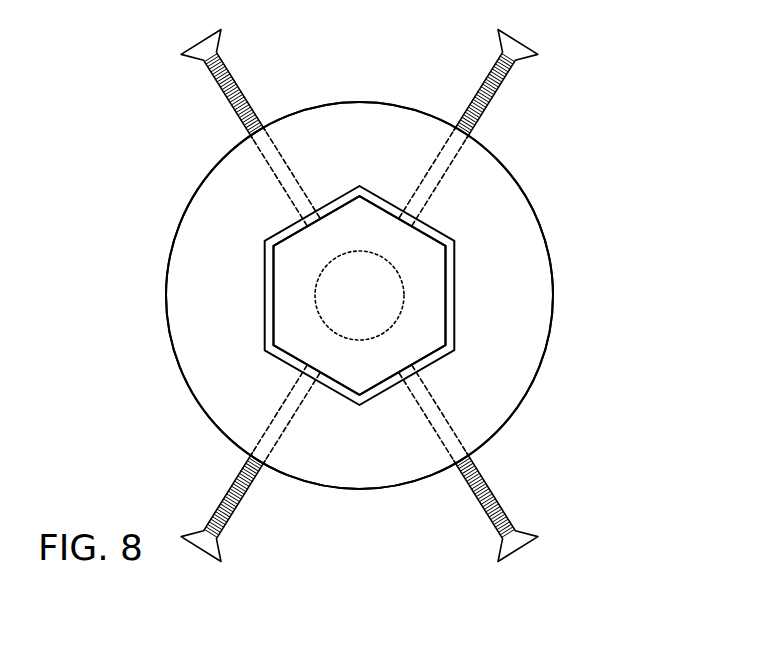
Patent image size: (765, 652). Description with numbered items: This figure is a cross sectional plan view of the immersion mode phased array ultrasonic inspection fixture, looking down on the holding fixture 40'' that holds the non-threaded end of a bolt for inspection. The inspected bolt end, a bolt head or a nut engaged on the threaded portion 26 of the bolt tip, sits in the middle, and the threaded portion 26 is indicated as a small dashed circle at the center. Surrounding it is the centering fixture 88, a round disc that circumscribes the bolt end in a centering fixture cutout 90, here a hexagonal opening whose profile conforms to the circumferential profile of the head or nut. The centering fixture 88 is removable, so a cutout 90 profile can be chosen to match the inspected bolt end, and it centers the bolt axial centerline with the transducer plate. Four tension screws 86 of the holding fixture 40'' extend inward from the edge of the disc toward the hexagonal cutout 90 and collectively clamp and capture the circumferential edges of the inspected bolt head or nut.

The threaded portion 26 is at (358, 265).
The holding fixture 40'' is at (388, 295).
The tension screws 86 is at (200, 53).
The centering fixture 88 is at (513, 210).
The centering fixture cutout 90 is at (268, 313).